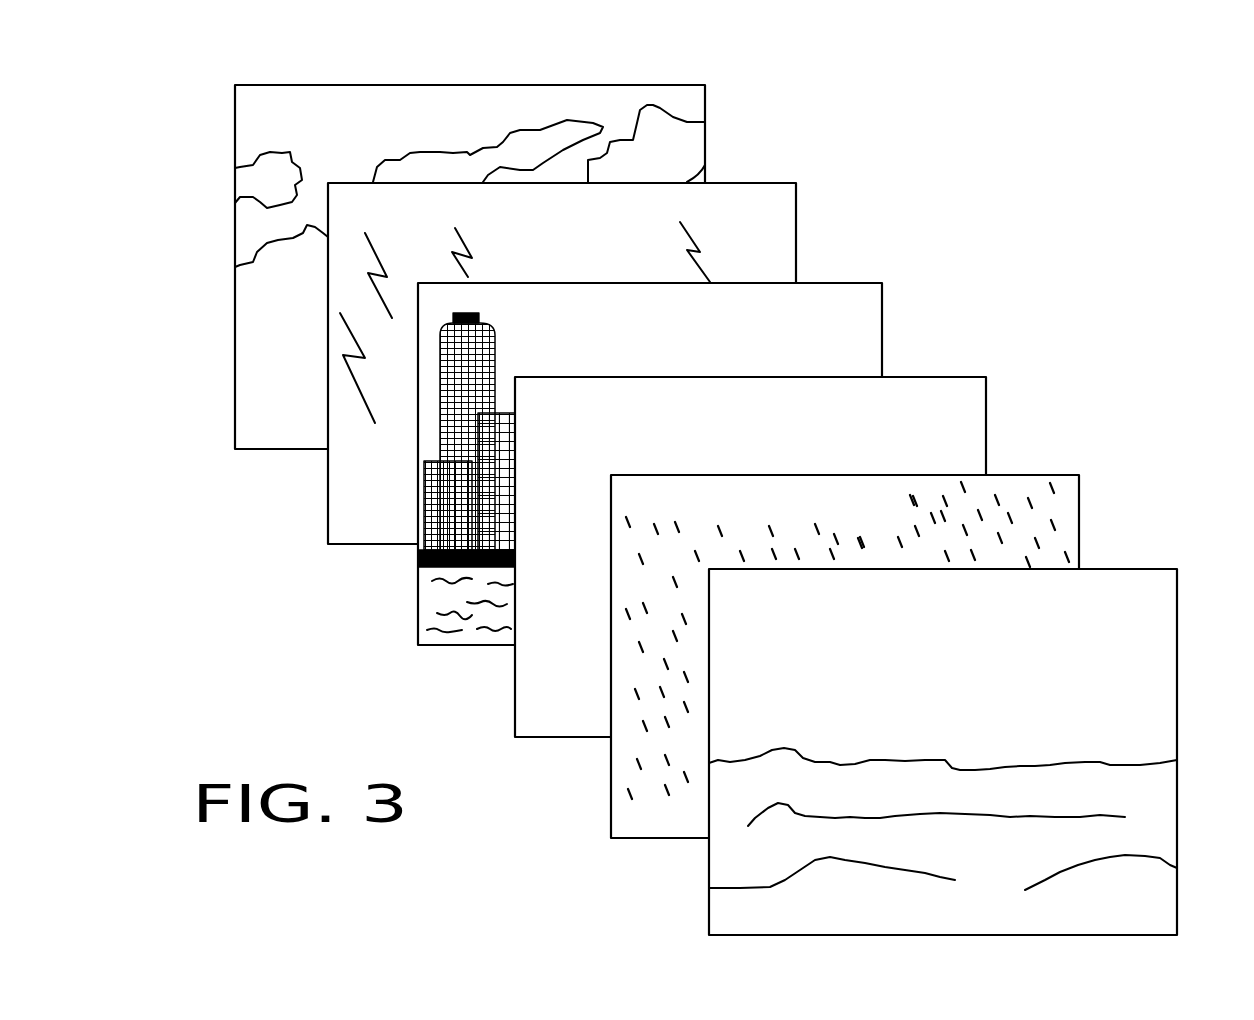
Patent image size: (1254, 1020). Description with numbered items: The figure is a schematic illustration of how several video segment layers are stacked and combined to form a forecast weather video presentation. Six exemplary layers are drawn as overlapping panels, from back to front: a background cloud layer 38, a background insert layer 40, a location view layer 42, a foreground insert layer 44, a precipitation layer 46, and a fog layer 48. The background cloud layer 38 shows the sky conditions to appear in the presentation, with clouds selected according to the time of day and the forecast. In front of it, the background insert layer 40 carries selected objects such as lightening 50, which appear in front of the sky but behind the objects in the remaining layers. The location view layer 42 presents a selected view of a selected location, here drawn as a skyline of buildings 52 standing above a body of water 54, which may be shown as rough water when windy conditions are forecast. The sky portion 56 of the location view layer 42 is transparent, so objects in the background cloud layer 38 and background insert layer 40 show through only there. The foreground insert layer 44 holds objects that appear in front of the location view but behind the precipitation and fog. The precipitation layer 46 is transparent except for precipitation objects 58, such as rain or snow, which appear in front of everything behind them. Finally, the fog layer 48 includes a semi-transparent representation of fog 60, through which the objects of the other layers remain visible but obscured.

The background cloud layer 38 is at (707, 103).
The background insert layer 40 is at (531, 363).
The location view layer 42 is at (620, 455).
The foreground insert layer 44 is at (988, 415).
The precipitation layer 46 is at (891, 654).
The fog layer 48 is at (976, 752).
The lightening 50 is at (352, 392).
The building location image 52 is at (425, 478).
The body of water 54 is at (422, 594).
The sky portion 56 is at (848, 337).
The precipitation objects 58 is at (1068, 557).
The fog 60 is at (1157, 815).